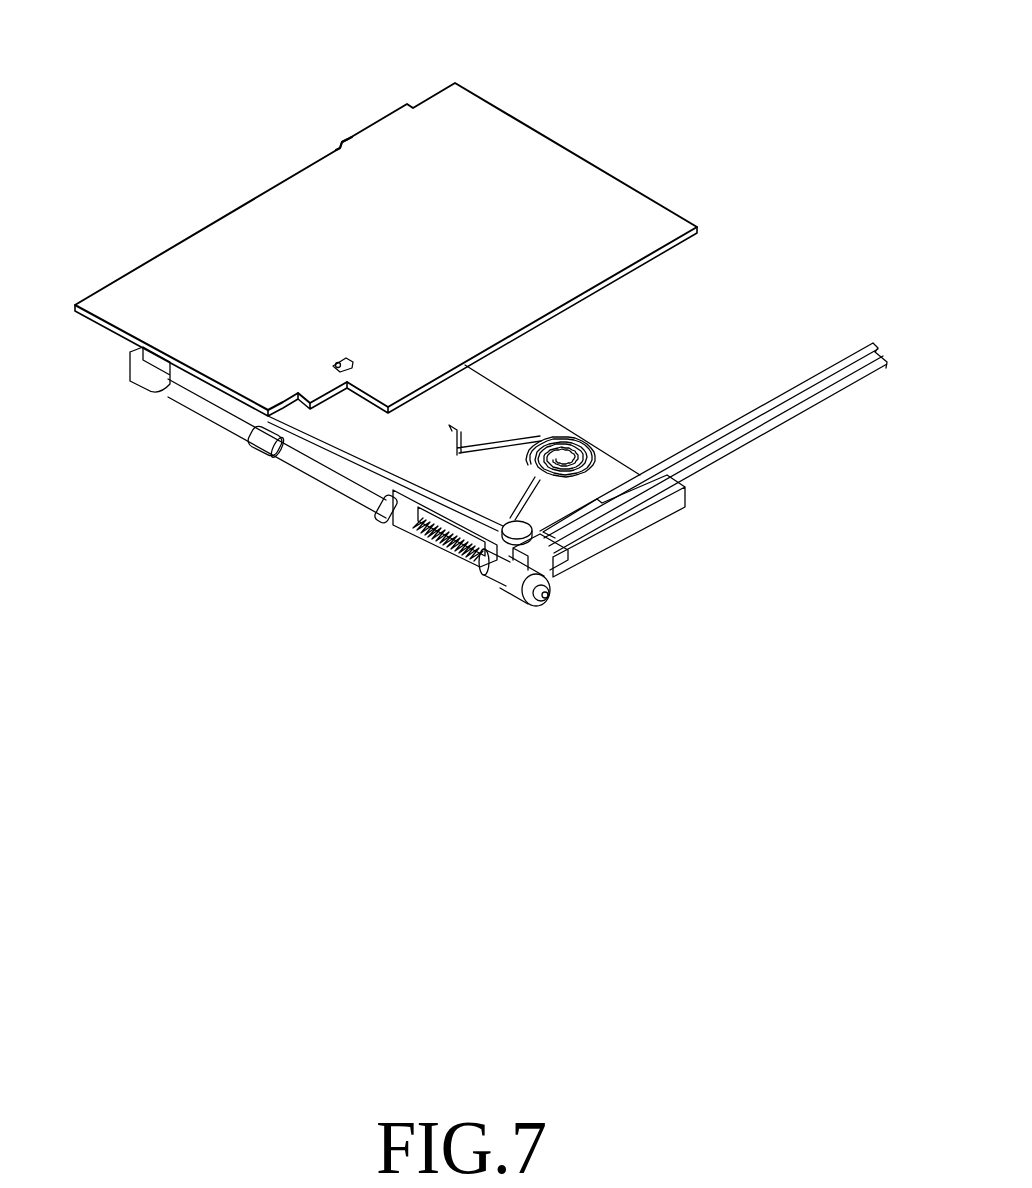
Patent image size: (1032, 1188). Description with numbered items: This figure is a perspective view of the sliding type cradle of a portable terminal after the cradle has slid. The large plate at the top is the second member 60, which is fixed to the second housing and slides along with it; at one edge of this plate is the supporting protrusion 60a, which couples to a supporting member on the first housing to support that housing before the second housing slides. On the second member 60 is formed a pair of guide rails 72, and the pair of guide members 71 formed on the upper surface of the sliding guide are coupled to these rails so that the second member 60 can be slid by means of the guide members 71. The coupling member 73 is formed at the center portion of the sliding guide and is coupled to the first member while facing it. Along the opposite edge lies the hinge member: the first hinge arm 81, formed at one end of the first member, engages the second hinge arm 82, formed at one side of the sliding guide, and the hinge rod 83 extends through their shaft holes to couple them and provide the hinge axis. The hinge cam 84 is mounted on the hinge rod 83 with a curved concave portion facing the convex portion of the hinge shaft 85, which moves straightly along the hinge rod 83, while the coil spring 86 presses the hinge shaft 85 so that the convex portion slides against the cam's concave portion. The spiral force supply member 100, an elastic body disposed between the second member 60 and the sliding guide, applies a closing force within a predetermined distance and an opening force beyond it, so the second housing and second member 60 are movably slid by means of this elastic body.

The second member 60 is at (553, 165).
The supporting protrusion 60a is at (375, 117).
The guide member 71 is at (604, 541).
The guide rail 72 is at (773, 415).
The coupling member 73 is at (387, 473).
The first hinge arm 81 is at (260, 440).
The second hinge arm 82 is at (148, 377).
The hinge rod 83 is at (323, 470).
The hinge cam 84 is at (497, 584).
The hinge shaft 85 is at (471, 572).
The coil spring 86 is at (437, 548).
The force supply member 100 is at (575, 447).